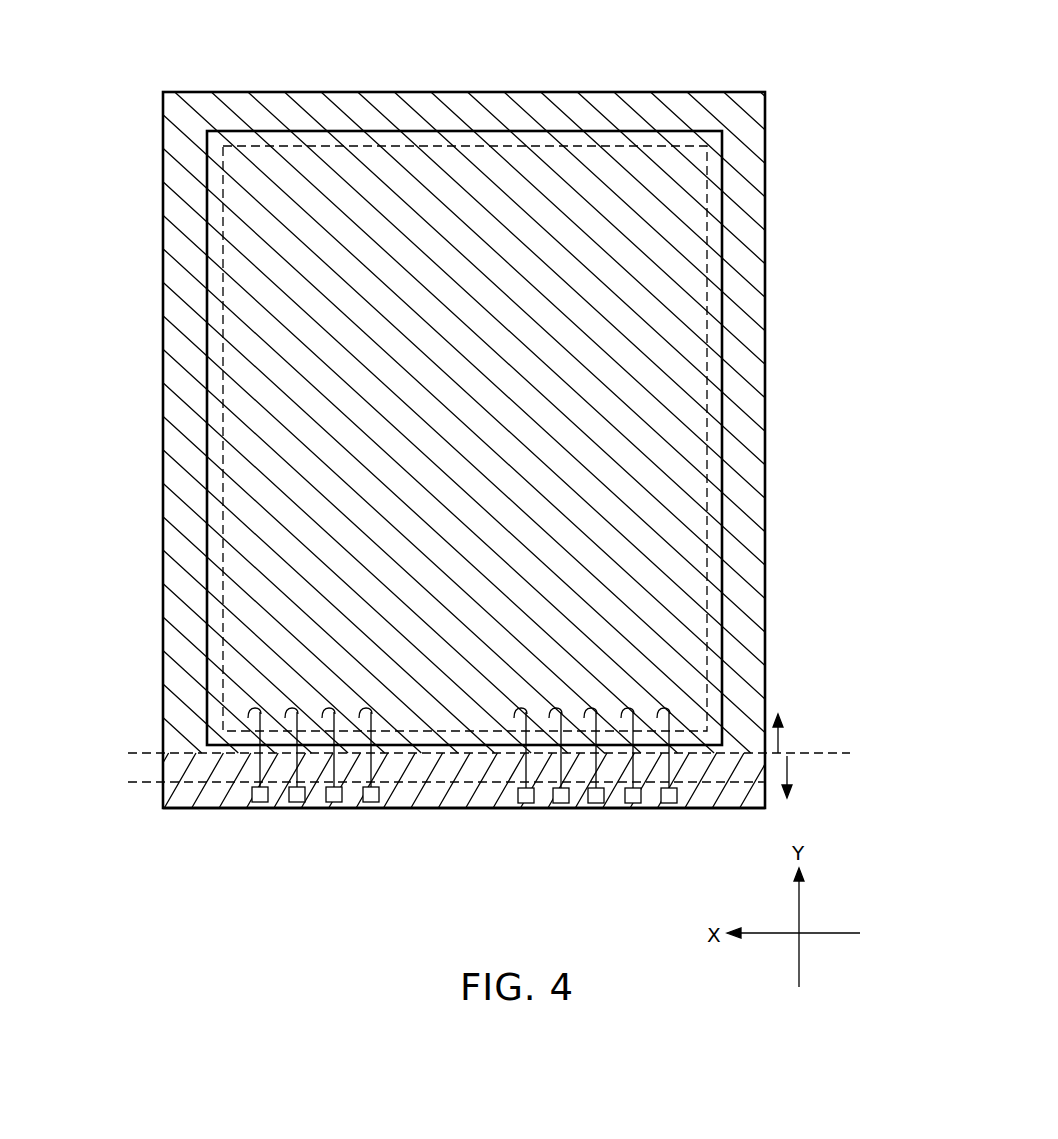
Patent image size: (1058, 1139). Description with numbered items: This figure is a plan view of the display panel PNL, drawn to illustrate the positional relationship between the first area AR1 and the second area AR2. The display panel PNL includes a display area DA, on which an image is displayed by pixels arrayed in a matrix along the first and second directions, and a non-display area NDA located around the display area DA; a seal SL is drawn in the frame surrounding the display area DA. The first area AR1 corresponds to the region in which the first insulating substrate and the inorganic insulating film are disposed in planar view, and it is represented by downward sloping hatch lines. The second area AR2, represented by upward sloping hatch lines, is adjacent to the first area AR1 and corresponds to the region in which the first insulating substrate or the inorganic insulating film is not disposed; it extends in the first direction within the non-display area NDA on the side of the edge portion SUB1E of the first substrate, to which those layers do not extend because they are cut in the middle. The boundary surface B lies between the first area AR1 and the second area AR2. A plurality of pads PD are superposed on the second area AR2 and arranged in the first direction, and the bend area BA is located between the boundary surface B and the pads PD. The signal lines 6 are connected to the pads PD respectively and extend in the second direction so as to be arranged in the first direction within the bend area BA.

The display panel PNL is at (719, 91).
The seal SL is at (422, 107).
The non-display area NDA is at (605, 108).
The display area DA is at (472, 147).
The bend area BA is at (140, 753).
The boundary surface B is at (499, 756).
The signal lines 6 is at (260, 722).
The pads PD is at (262, 809).
The edge portion of the first substrate SUB1E is at (479, 811).
The first area AR1 is at (807, 733).
The second area AR2 is at (812, 777).